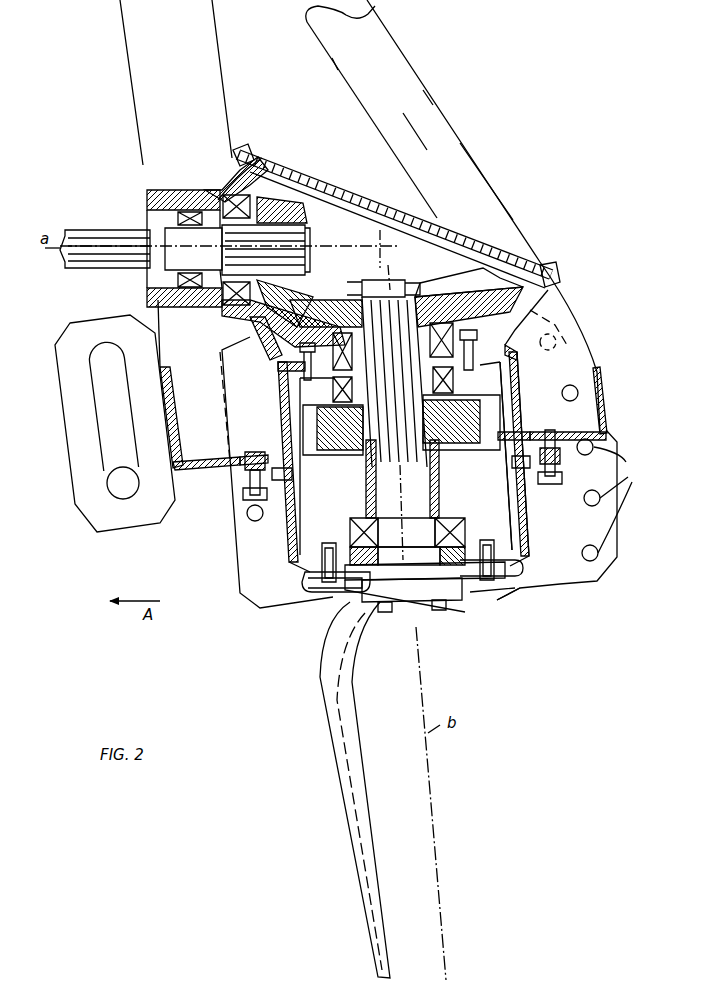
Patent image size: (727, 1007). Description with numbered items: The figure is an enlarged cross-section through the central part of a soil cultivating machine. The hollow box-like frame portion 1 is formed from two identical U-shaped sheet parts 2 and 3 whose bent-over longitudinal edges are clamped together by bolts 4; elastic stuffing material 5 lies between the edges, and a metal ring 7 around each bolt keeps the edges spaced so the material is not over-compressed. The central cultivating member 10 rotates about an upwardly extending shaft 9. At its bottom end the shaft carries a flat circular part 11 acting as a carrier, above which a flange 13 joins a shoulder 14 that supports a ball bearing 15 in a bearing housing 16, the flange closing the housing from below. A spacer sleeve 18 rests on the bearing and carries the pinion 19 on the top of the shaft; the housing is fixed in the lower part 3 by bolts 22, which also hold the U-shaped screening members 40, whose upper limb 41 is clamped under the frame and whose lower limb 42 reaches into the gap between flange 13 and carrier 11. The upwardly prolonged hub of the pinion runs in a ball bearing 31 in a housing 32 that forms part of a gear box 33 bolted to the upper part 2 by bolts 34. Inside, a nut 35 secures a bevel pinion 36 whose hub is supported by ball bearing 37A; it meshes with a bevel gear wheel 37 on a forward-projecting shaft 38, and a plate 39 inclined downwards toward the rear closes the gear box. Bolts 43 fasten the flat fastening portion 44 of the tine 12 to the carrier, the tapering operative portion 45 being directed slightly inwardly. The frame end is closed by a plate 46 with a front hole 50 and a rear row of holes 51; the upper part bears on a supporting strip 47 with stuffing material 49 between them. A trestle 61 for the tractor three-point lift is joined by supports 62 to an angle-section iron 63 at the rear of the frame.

The frame portion 1 is at (275, 540).
The U-shaped part 2 is at (280, 425).
The U-shaped part 3 is at (282, 560).
The bolt 4 is at (245, 452).
The elastic stuffing material 5 is at (286, 477).
The metal ring 7 is at (240, 490).
The shaft 9 is at (430, 497).
The cultivating member 10 is at (388, 689).
The circular part 11 is at (357, 606).
The tine 12 is at (328, 728).
The flange 13 is at (407, 551).
The shoulder 14 is at (400, 538).
The ball bearing 15 is at (447, 520).
The bearing housing 16 is at (355, 530).
The spacer sleeve 18 is at (370, 490).
The pinion 19 is at (440, 445).
The bolt 22 is at (525, 585).
The ball bearing 31 is at (330, 385).
The bearing housing 32 is at (457, 359).
The gear box 33 is at (237, 322).
The bolt 34 is at (290, 354).
The nut 35 is at (352, 288).
The bevel pinion 36 is at (462, 271).
The bevel gear wheel 37 is at (302, 210).
The ball bearing 37A is at (469, 282).
The shaft 38 is at (114, 230).
The plate 39 is at (334, 178).
The screening member 40 is at (300, 587).
The upper limb 41 is at (328, 562).
The lower limb 42 is at (320, 590).
The bolt 43 is at (412, 617).
The fastening portion 44 is at (465, 600).
The operative portion 45 is at (368, 806).
The plate 46 is at (572, 580).
The supporting strip 47 is at (512, 398).
The stuffing material 49 is at (516, 410).
The hole 50 is at (248, 514).
The hole 51 is at (620, 500).
The trestle 61 is at (218, 82).
The support 62 is at (452, 120).
The angle-section iron 63 is at (604, 386).